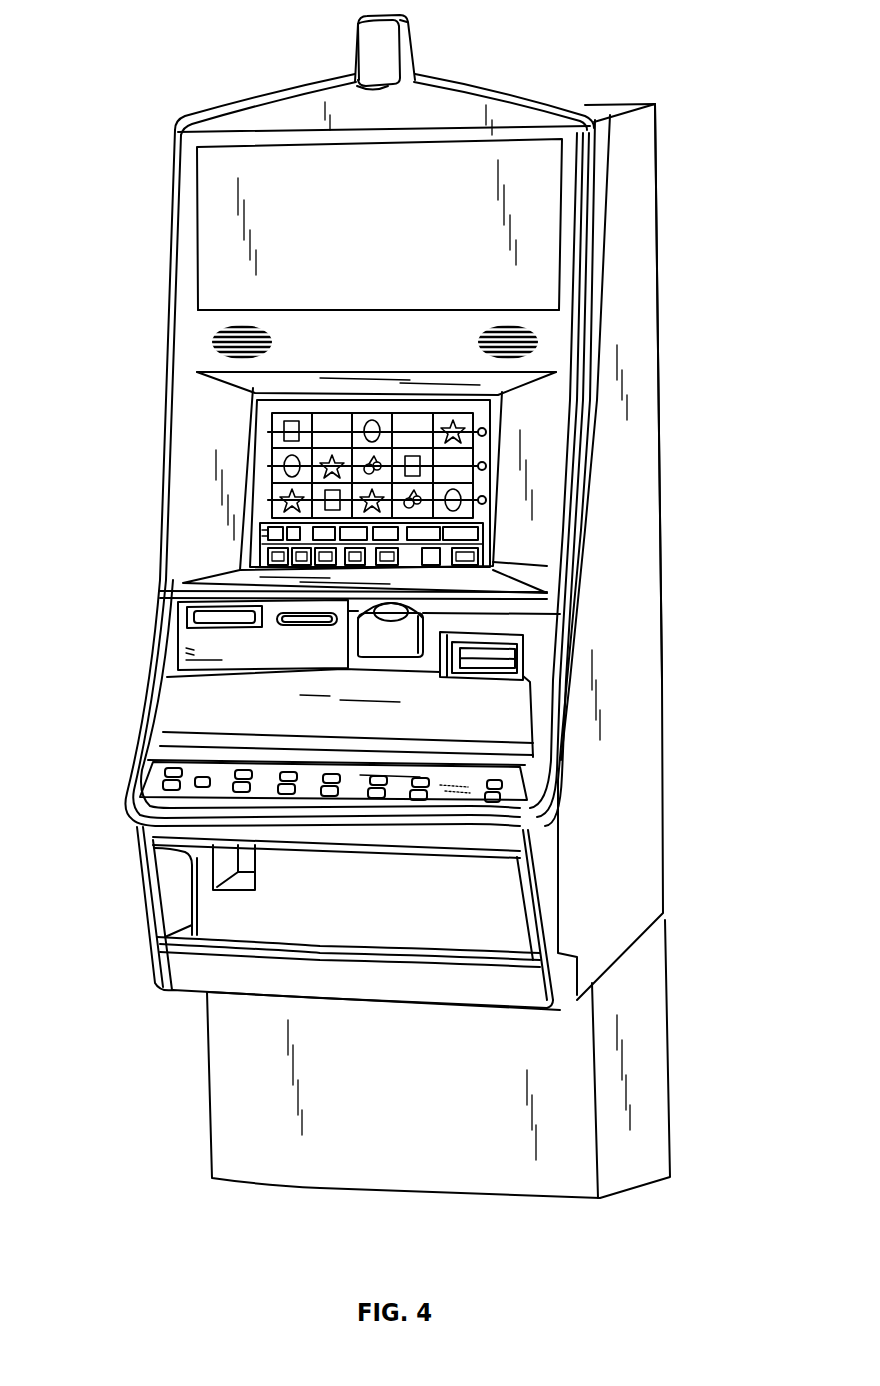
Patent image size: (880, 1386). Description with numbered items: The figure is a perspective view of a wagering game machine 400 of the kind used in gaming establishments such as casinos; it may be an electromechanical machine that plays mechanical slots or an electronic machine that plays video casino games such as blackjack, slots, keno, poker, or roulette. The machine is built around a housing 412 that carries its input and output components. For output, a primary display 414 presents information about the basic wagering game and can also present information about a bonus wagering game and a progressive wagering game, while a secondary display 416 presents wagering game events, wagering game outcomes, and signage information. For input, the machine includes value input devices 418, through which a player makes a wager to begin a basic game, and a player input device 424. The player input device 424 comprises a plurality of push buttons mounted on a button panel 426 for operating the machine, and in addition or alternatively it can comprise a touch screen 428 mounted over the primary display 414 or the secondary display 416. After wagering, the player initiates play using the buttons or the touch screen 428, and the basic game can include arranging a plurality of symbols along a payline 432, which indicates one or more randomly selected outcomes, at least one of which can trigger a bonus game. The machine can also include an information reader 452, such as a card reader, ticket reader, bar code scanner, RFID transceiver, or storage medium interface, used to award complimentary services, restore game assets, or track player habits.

The wagering game machine 400 is at (100, 24).
The housing 412 is at (633, 148).
The primary display 414 is at (250, 510).
The secondary display 416 is at (265, 247).
The value input devices 418 is at (445, 615).
The player input device 424 is at (507, 783).
The button panel 426 is at (233, 782).
The touch screen 428 is at (493, 560).
The payline 432 is at (387, 425).
The information reader 452 is at (288, 627).